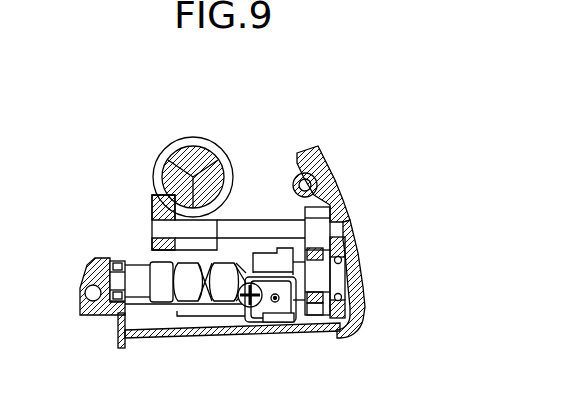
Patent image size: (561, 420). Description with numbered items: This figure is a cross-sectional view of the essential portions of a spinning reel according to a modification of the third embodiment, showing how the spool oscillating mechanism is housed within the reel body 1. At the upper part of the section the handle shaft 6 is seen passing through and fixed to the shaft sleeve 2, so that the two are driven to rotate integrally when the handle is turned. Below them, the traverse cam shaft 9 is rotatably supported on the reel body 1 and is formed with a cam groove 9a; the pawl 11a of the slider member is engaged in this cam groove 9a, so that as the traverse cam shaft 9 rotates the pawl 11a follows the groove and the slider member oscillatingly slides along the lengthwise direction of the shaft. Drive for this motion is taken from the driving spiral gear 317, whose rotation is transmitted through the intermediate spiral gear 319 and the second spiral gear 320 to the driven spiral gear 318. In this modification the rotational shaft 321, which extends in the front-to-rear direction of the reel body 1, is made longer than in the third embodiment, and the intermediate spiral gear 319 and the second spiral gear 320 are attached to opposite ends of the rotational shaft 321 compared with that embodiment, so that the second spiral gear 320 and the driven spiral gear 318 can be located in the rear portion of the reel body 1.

The reel body 1 is at (337, 165).
The shaft sleeve 2 is at (183, 147).
The handle shaft 6 is at (196, 153).
The traverse cam shaft 9 is at (162, 285).
The cam groove 9a is at (202, 293).
The pawl 11a is at (278, 323).
The driving spiral gear 317 is at (218, 152).
The driven spiral gear 318 is at (314, 313).
The intermediate spiral gear 319 is at (219, 244).
The second spiral gear 320 is at (314, 212).
The rotational shaft 321 is at (241, 233).